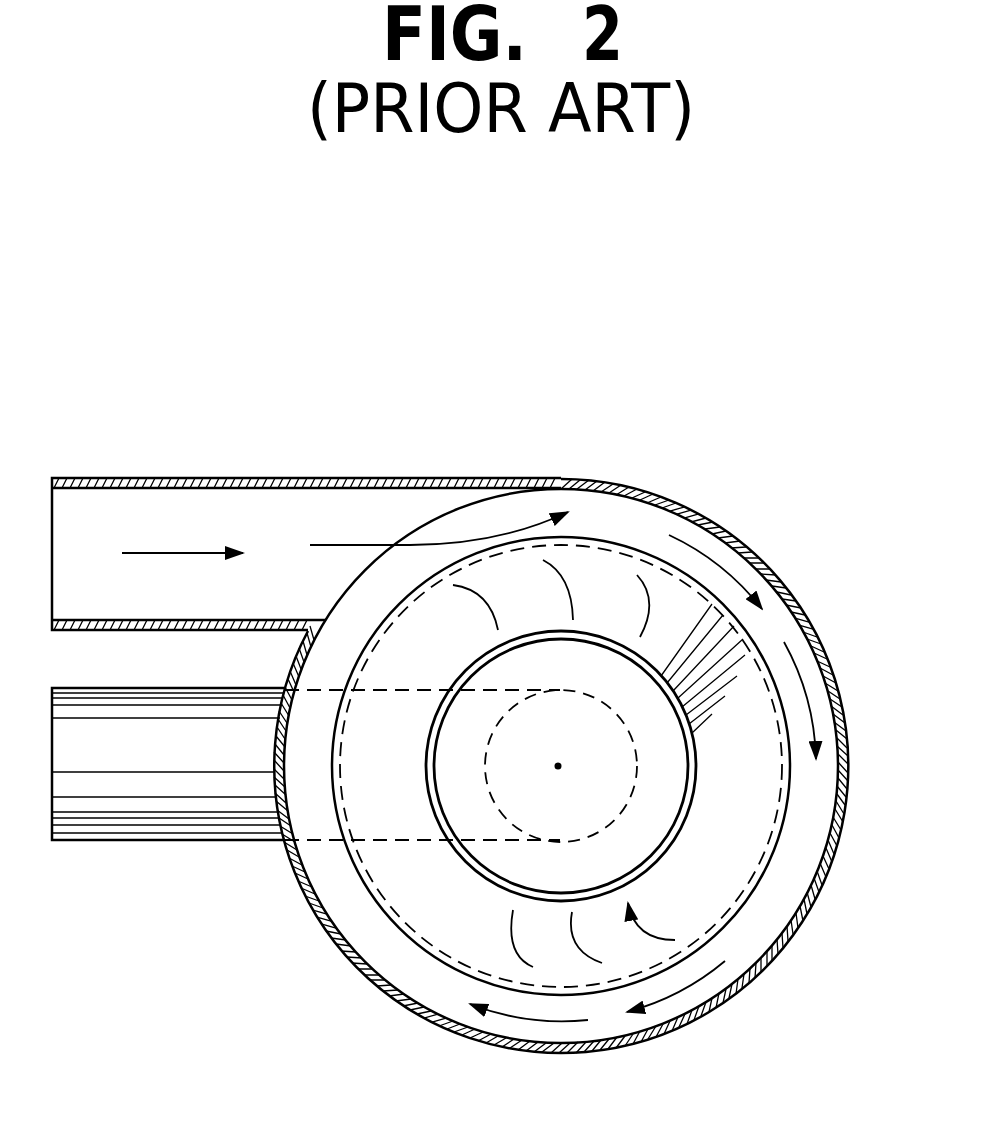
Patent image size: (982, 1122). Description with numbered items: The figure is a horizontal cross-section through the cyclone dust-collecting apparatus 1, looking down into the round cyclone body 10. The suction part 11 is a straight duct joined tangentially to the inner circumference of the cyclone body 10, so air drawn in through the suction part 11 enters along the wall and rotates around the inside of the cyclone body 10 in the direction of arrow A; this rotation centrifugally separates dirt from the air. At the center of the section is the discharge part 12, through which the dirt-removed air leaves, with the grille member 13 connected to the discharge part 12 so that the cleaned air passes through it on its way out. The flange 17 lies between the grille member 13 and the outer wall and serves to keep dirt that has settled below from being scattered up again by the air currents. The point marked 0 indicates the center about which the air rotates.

The cyclone dust-collecting apparatus 1 is at (170, 276).
The cyclone body 10 is at (680, 510).
The suction part 11 is at (308, 478).
The discharge part 12 is at (122, 822).
The grille member 13 is at (529, 630).
The flange 17 is at (420, 630).
The rotation center 0 is at (560, 747).
The arrow A is at (797, 657).